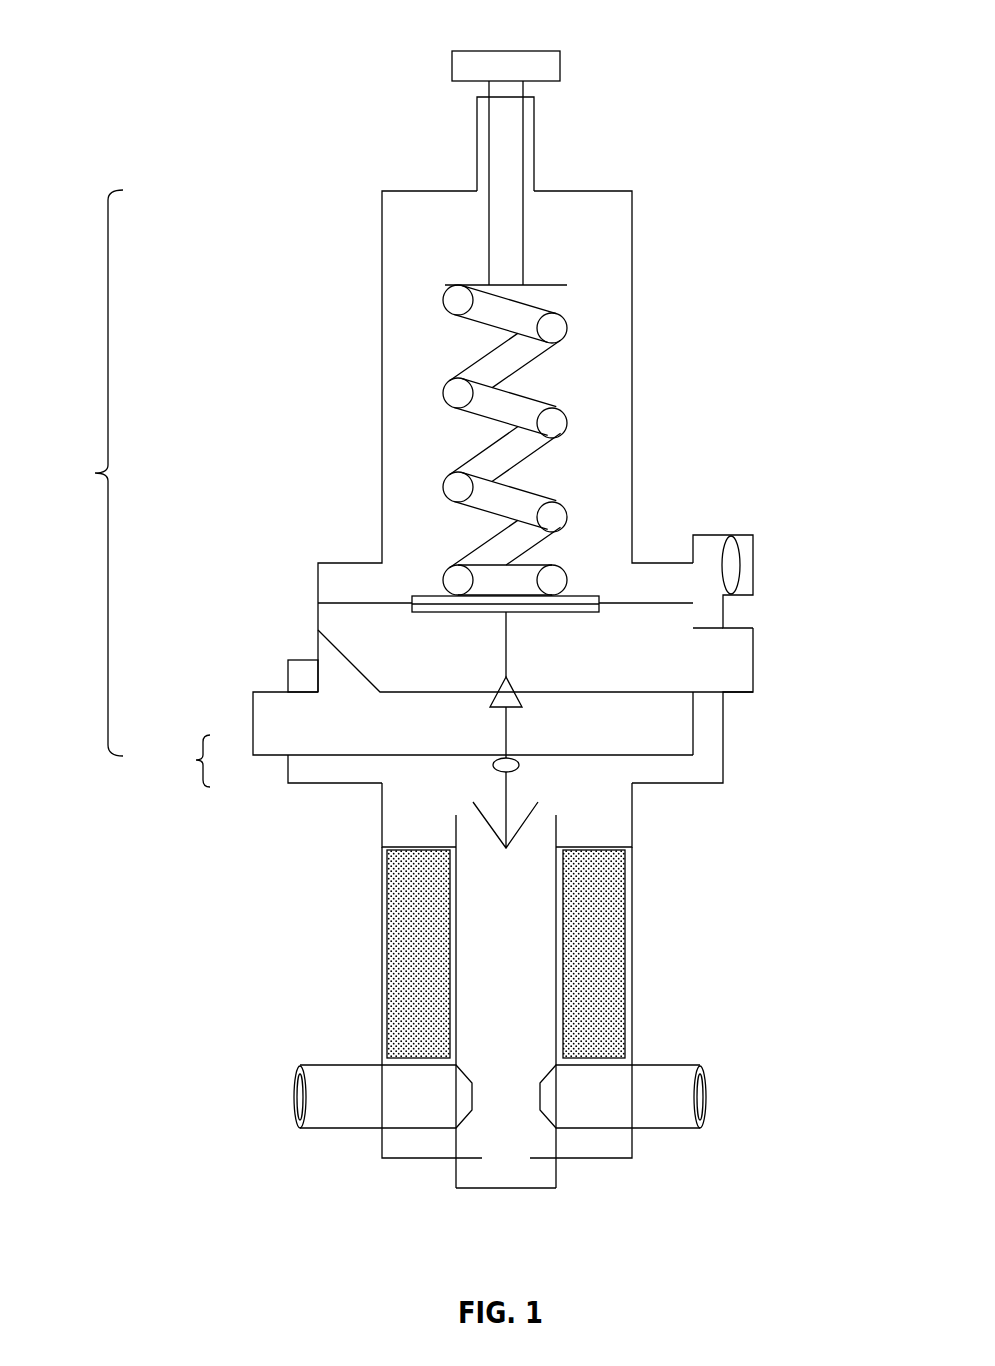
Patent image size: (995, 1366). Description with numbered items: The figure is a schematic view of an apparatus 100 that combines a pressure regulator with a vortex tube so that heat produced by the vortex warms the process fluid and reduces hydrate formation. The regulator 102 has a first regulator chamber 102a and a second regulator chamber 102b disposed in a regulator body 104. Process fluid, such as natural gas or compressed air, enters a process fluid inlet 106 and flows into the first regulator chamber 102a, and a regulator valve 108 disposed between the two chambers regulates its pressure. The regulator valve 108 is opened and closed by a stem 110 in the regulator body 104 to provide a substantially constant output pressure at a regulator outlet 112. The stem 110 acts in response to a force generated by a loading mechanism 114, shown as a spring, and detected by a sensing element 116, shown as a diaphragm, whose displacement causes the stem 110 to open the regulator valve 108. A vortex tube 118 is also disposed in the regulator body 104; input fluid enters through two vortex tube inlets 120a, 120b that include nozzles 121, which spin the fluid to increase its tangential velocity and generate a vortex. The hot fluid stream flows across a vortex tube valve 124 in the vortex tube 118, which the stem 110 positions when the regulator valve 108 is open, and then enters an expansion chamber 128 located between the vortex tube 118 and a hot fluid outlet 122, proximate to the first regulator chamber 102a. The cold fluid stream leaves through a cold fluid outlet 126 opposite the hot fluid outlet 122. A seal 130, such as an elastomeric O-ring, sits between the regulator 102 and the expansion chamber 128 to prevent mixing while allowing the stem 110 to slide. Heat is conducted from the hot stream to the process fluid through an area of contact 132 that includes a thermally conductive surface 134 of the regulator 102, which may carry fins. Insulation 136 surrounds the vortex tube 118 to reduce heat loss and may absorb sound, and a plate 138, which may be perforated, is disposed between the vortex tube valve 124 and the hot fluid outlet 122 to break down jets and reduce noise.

The apparatus 100 is at (230, 36).
The regulator 102 is at (81, 473).
The first regulator chamber 102a is at (256, 700).
The second regulator chamber 102b is at (743, 647).
The regulator body 104 is at (382, 191).
The process fluid inlet 106 is at (253, 740).
The regulator valve 108 is at (520, 700).
The stem 110 is at (510, 636).
The regulator outlet 112 is at (753, 660).
The loading mechanism 114 is at (606, 286).
The sensing element 116 is at (572, 597).
The vortex tube 118 is at (522, 1050).
The vortex tube inlet 120a is at (297, 1073).
The vortex tube inlet 120b is at (702, 1073).
The nozzles 121 is at (298, 1112).
The hot fluid outlet 122 is at (755, 565).
The vortex tube valve 124 is at (535, 805).
The cold fluid outlet 126 is at (498, 1190).
The expansion chamber 128 is at (593, 788).
The seal 130 is at (500, 771).
The area of contact 132 is at (265, 761).
The surface 134 is at (342, 766).
The insulation 136 is at (393, 955).
The plate 138 is at (731, 540).